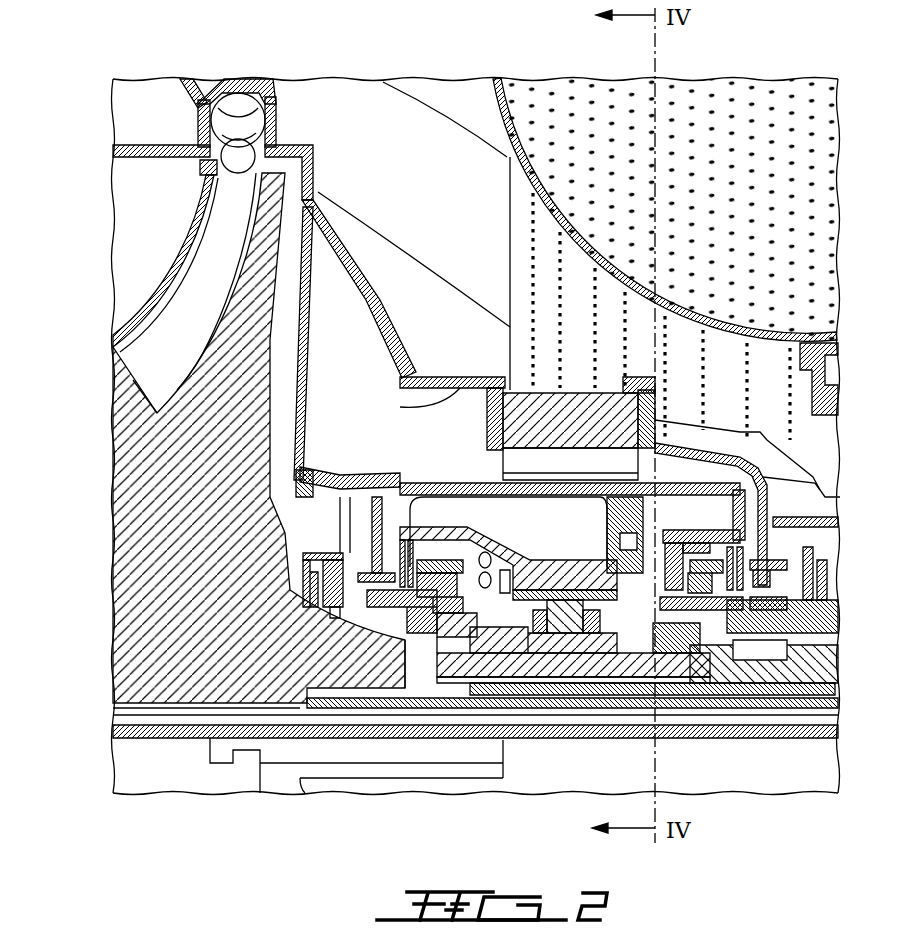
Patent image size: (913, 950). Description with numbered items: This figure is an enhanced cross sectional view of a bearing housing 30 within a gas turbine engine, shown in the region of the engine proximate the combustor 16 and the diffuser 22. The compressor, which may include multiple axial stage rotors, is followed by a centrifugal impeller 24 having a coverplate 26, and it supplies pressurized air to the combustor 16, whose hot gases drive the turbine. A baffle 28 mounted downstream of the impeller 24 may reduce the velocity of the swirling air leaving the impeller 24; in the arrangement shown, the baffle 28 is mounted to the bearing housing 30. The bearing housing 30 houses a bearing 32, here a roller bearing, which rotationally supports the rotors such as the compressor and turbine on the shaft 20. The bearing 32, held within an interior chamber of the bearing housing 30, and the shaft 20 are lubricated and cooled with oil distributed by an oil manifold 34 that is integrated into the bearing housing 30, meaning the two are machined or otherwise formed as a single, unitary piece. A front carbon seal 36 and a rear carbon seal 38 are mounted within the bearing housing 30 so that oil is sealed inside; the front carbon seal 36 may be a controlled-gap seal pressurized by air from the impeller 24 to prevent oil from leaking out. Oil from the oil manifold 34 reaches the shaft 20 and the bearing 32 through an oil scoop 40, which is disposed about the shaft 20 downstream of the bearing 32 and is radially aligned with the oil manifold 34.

The combustor 16 is at (577, 157).
The shaft 20 is at (187, 748).
The diffuser 22 is at (238, 123).
The centrifugal impeller 24 is at (167, 367).
The coverplate 26 is at (353, 267).
The baffle 28 is at (337, 380).
The bearing housing 30 is at (556, 392).
The bearing 32 is at (563, 585).
The oil manifold 34 is at (640, 513).
The front carbon seal 36 is at (428, 582).
The rear carbon seal 38 is at (700, 585).
The oil scoop 40 is at (680, 648).